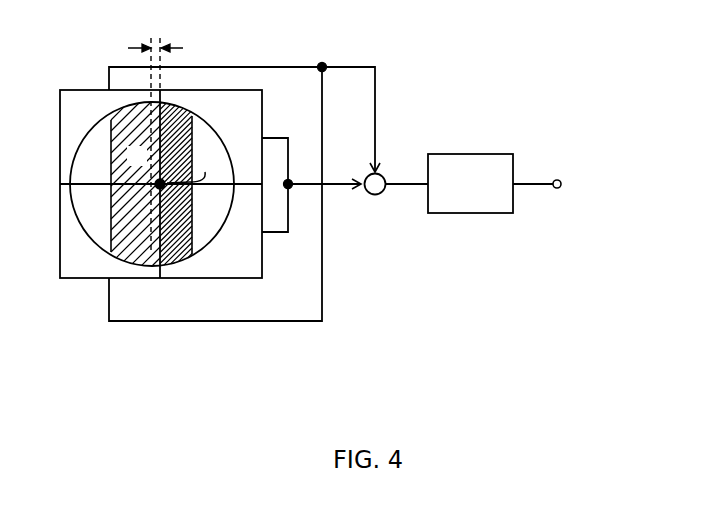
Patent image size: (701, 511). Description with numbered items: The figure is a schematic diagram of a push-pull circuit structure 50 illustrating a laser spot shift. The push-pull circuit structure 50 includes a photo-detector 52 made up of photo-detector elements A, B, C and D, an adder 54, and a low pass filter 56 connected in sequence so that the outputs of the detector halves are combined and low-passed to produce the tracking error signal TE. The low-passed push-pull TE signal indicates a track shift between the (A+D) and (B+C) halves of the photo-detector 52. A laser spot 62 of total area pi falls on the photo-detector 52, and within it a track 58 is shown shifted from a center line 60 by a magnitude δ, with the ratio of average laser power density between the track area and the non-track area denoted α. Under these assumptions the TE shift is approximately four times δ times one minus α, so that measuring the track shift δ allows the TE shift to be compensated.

The push-pull circuit structure 50 is at (484, 90).
The photo-detector 52 is at (60, 196).
The adder 54 is at (382, 193).
The low pass filter 56 is at (478, 213).
The track 58 is at (112, 242).
The center line 60 is at (162, 248).
The laser spot 62 is at (202, 248).